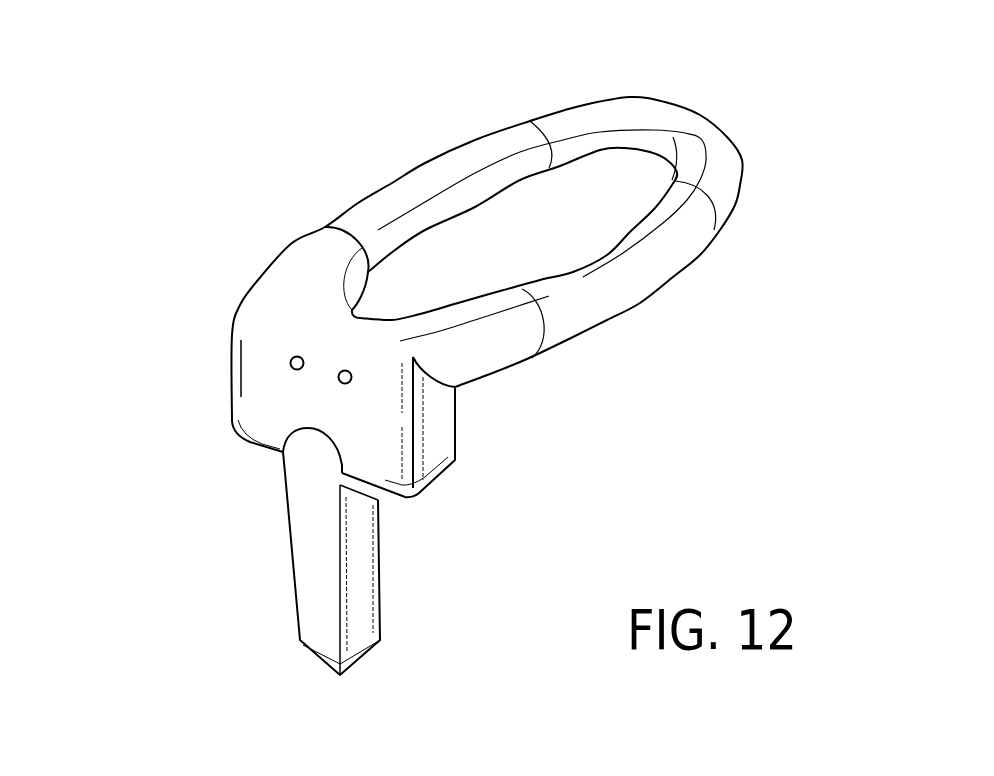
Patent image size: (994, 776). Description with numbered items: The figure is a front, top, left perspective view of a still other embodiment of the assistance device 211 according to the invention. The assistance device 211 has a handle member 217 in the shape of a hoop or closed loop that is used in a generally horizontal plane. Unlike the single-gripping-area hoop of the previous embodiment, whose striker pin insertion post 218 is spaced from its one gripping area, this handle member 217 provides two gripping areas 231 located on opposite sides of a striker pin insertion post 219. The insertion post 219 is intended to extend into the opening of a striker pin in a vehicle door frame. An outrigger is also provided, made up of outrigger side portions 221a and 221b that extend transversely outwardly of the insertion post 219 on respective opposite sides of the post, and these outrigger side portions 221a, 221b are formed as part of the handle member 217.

The assistance device 211 is at (320, 210).
The handle member 217 is at (700, 130).
The striker pin insertion post 218 is at (441, 8).
The striker pin insertion post 219 is at (380, 590).
The outrigger side portion 221a is at (255, 402).
The outrigger side portion 221b is at (438, 433).
The gripping area 231 is at (463, 163).